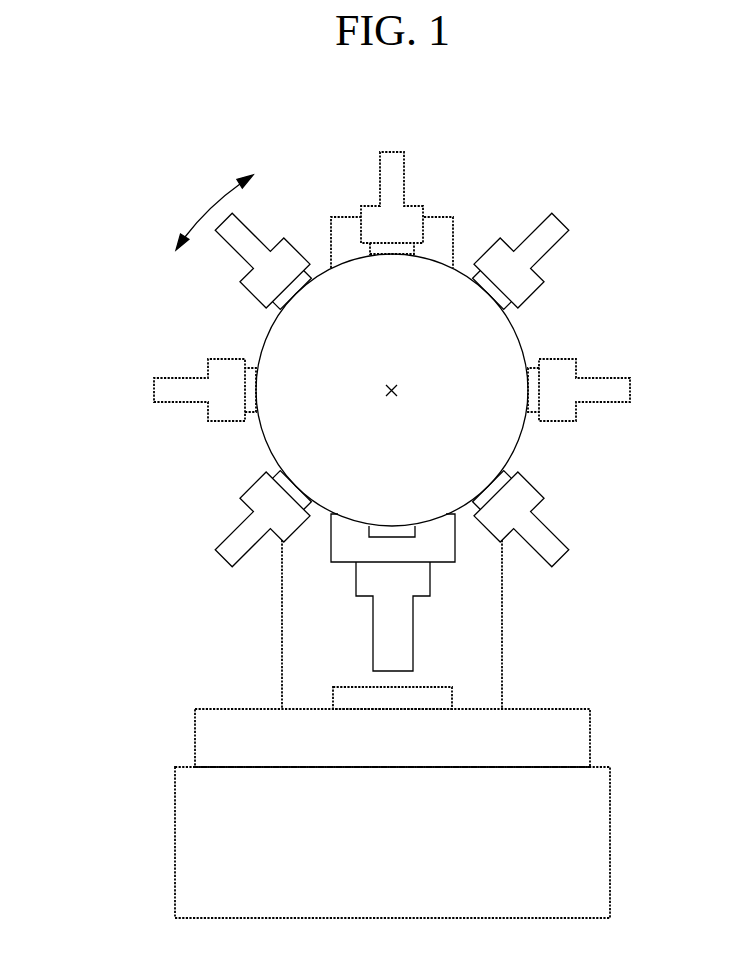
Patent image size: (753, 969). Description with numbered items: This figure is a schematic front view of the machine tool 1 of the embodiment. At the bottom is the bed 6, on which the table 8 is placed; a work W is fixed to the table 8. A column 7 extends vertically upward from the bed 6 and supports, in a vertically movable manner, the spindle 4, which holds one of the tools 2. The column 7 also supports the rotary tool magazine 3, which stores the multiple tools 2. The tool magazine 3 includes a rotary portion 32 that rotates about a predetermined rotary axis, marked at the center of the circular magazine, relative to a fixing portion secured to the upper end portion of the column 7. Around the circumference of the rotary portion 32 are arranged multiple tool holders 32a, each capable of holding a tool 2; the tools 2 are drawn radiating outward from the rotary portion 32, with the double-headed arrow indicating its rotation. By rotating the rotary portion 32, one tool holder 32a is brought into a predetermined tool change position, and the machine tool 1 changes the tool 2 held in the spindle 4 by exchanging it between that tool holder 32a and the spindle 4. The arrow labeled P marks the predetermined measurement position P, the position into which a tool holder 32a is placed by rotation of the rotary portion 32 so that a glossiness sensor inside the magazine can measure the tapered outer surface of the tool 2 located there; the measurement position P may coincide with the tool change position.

The machine tool 1 is at (62, 112).
The tool 2 is at (182, 378).
The rotary tool magazine 3 is at (622, 212).
The rotary portion 32 is at (518, 335).
The tool holder 32a is at (248, 414).
The spindle 4 is at (455, 548).
The measurement position P is at (436, 548).
The work W is at (447, 686).
The column 7 is at (281, 648).
The table 8 is at (590, 738).
The bed 6 is at (610, 838).